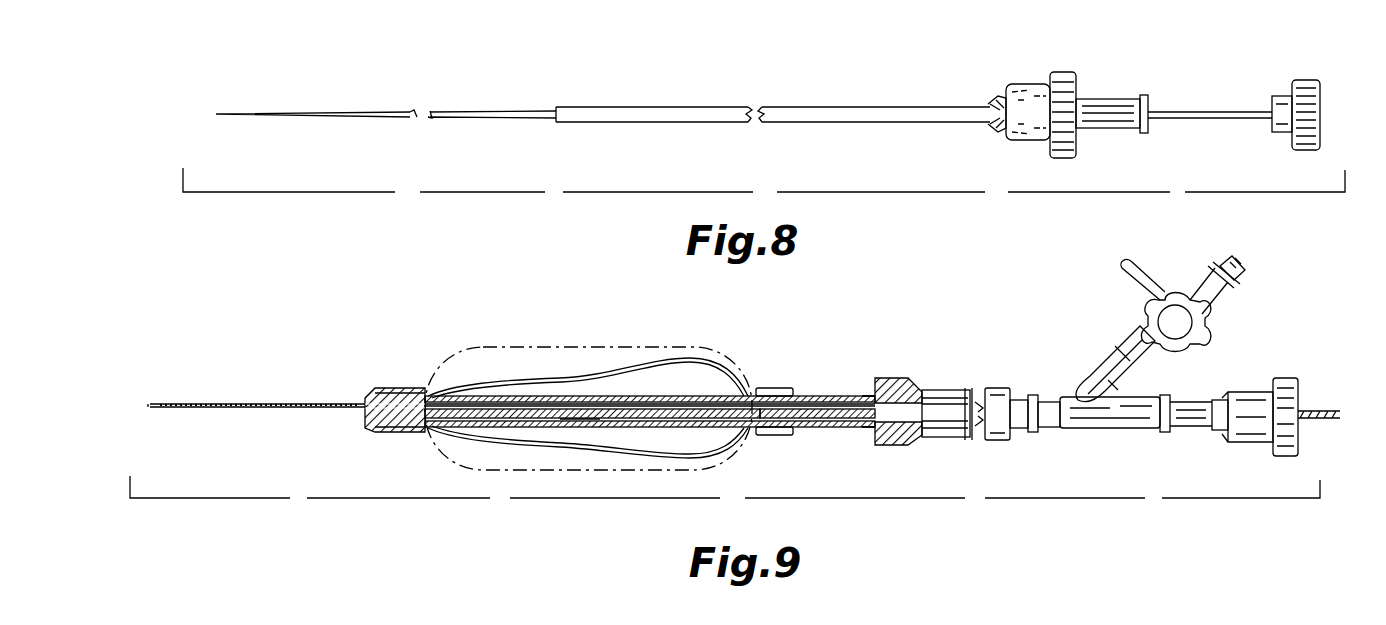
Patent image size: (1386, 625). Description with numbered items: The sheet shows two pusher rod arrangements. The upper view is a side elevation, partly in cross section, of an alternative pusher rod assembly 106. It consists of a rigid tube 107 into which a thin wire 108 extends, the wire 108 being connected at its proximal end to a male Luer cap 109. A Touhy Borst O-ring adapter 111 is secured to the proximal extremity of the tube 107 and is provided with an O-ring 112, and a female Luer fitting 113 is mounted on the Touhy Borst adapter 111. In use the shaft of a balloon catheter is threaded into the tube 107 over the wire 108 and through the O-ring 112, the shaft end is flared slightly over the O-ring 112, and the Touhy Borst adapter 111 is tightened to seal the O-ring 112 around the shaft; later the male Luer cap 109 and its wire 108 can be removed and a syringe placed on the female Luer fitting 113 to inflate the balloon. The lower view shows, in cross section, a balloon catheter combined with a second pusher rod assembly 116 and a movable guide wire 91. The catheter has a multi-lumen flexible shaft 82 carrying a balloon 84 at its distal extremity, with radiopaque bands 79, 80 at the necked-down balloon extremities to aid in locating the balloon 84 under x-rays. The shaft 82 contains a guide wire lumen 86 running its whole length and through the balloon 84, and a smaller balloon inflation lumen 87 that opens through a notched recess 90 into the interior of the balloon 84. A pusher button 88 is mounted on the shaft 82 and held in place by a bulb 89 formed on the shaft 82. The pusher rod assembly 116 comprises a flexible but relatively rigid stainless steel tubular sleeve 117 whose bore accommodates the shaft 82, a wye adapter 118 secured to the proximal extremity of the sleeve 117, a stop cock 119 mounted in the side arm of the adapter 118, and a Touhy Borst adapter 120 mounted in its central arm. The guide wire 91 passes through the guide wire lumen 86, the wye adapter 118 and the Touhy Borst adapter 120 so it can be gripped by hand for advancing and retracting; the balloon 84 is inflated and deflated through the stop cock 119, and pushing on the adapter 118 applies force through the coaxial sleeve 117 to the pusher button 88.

In FIG. 8, the pusher rod assembly 106 is at (934, 104).
In FIG. 8, the rigid tube 107 is at (838, 105).
In FIG. 8, the wire 108 is at (485, 110).
In FIG. 8, the male Luer cap 109 is at (1302, 80).
In FIG. 8, the Touhy Borst O-ring adapter 111 is at (1026, 88).
In FIG. 8, the O-ring 112 is at (996, 130).
In FIG. 8, the female Luer fitting 113 is at (1106, 100).
In FIG. 9, the radiopaque band 79 is at (763, 388).
In FIG. 9, the radiopaque band 80 is at (402, 388).
In FIG. 9, the multi-lumen flexible shaft 82 is at (845, 428).
In FIG. 9, the balloon 84 is at (578, 376).
In FIG. 9, the guide wire lumen 86 is at (705, 408).
In FIG. 9, the balloon inflation lumen 87 is at (808, 420).
In FIG. 9, the pusher button 88 is at (886, 378).
In FIG. 9, the bulb 89 is at (868, 395).
In FIG. 9, the notched recess 90 is at (585, 426).
In FIG. 9, the guide wire 91 is at (246, 402).
In FIG. 9, the pusher rod assembly 116 is at (1072, 392).
In FIG. 9, the tubular sleeve 117 is at (946, 390).
In FIG. 9, the wye adapter 118 is at (1106, 352).
In FIG. 9, the stop cock 119 is at (1170, 303).
In FIG. 9, the Touhy Borst adapter 120 is at (1250, 395).